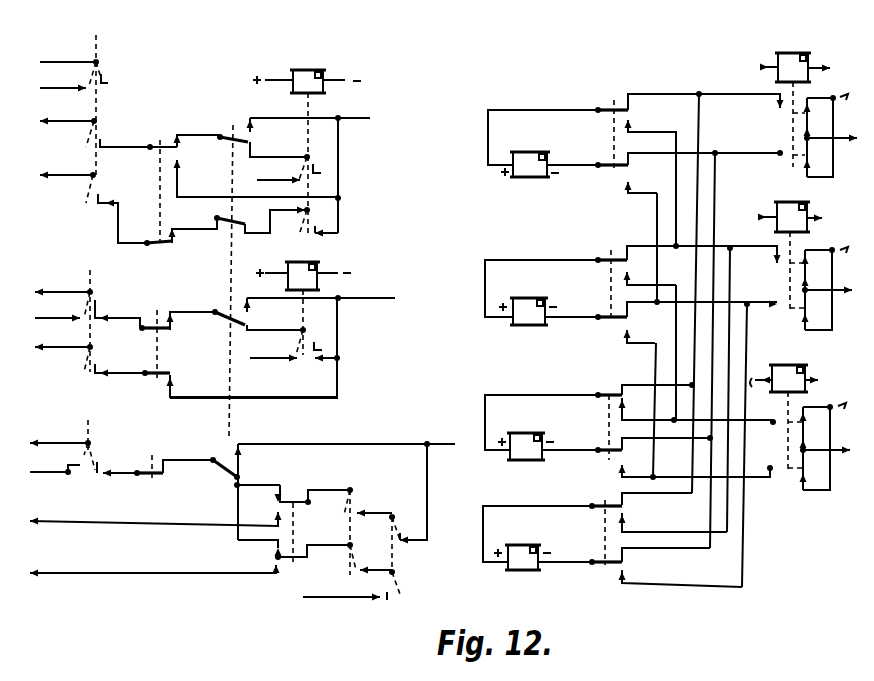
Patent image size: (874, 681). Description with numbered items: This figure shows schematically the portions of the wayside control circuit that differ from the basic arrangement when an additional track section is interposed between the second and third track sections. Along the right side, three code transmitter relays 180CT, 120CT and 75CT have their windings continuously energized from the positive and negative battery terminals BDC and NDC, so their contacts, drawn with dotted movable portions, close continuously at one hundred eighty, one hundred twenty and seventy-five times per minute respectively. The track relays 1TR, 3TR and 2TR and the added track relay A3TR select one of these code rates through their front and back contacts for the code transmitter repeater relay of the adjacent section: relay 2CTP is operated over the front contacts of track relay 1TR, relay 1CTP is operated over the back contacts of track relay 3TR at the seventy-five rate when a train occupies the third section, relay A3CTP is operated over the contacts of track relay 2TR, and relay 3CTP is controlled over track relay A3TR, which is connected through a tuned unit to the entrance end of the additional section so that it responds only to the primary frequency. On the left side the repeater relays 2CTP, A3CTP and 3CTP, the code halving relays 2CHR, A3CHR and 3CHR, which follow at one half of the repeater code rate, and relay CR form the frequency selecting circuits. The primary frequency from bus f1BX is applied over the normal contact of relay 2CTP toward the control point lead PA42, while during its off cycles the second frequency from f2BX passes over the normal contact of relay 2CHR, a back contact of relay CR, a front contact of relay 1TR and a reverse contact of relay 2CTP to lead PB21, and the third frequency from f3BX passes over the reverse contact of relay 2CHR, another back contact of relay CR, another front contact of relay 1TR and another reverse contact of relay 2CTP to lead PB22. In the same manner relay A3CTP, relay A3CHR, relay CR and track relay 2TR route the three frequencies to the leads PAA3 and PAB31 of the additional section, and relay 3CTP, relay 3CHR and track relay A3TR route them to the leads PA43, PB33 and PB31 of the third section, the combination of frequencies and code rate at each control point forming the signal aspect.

The code transmitter repeater relay 2CTP is at (339, 127).
The track relay 1TR is at (444, 156).
The relay CR is at (258, 273).
The code halving relay 2CHR is at (307, 140).
The code transmitter repeater relay A3CTP is at (324, 409).
The track relay 2TR is at (434, 441).
The code halving relay A3CHR is at (303, 299).
The code transmitter repeater relay 3CTP is at (331, 485).
The track relay A3TR is at (439, 468).
The code halving relay 3CHR is at (393, 545).
The track relay 3TR is at (683, 284).
The code transmitter repeater relay 1CTP is at (541, 292).
The code transmitter relay 180CT is at (804, 102).
The code transmitter relay 120CT is at (802, 256).
The code transmitter relay 75CT is at (800, 415).
The PA42 signal line PA42 is at (69, 52).
The PB21 signal line PB21 is at (68, 111).
The PB22 signal line PB22 is at (68, 165).
The PAA3 signal line PAA3 is at (63, 285).
The PAB31 signal line PAB31 is at (63, 340).
The PA43 signal line PA43 is at (60, 435).
The PB33 signal line PB33 is at (156, 511).
The PB31 signal line PB31 is at (155, 561).
The primary frequency source f1BX is at (57, 281).
The second frequency source f2BX is at (311, 381).
The third frequency source f3BX is at (312, 320).
The positive battery terminal BDC is at (792, 234).
The negative battery terminal NDC is at (844, 268).